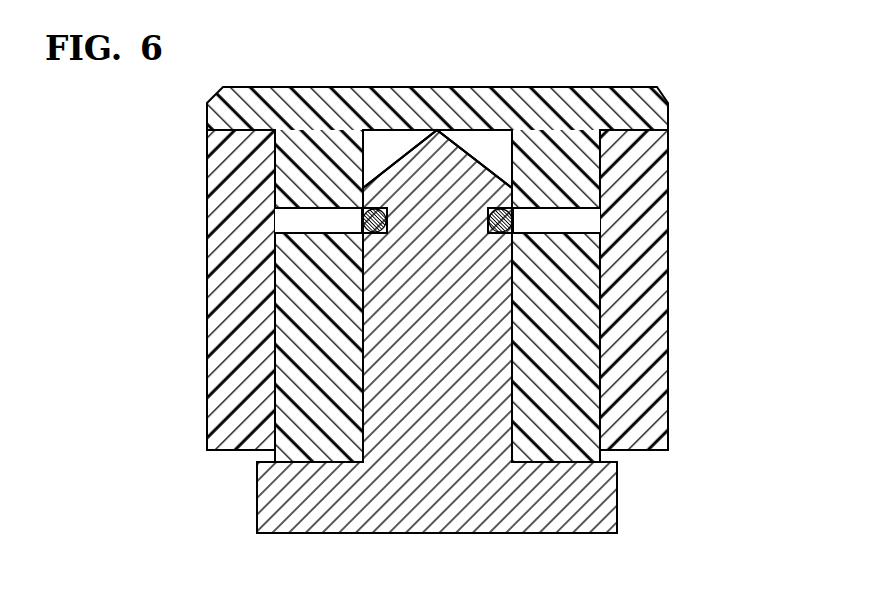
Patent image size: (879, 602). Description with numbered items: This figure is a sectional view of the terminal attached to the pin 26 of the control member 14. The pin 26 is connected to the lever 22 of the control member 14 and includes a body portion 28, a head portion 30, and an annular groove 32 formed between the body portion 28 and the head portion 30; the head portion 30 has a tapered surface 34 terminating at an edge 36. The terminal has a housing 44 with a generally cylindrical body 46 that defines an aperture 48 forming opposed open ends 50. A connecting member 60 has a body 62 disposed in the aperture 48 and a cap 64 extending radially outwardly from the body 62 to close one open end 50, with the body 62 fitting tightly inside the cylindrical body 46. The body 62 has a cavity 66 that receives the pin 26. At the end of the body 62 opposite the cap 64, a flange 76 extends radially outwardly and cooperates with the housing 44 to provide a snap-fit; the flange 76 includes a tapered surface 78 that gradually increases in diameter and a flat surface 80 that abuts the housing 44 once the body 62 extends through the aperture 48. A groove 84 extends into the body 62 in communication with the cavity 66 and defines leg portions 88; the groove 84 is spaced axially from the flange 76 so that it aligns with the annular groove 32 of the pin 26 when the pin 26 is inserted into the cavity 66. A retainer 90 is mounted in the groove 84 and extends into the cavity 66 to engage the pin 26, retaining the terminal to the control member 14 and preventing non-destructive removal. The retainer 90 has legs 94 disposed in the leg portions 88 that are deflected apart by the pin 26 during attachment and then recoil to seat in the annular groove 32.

The control member 14 is at (621, 520).
The lever 22 is at (565, 525).
The pin 26 is at (516, 367).
The body portion 28 is at (473, 323).
The head portion 30 is at (457, 160).
The annular groove 32 is at (503, 143).
The tapered surface 34 is at (397, 158).
The edge 36 is at (350, 567).
The housing 44 is at (666, 246).
The cylindrical body 46 is at (657, 157).
The aperture 48 is at (594, 153).
The open end 50 is at (259, 129).
The connecting member 60 is at (209, 109).
The body 62 is at (290, 329).
The cap 64 is at (422, 95).
The cavity 66 is at (507, 212).
The flange 76 is at (267, 455).
The tapered surface 78 is at (616, 461).
The flat surface 80 is at (613, 452).
The groove 84 is at (335, 230).
The leg portions 88 is at (299, 218).
The retainer 90 is at (528, 207).
The legs 94 is at (276, 231).